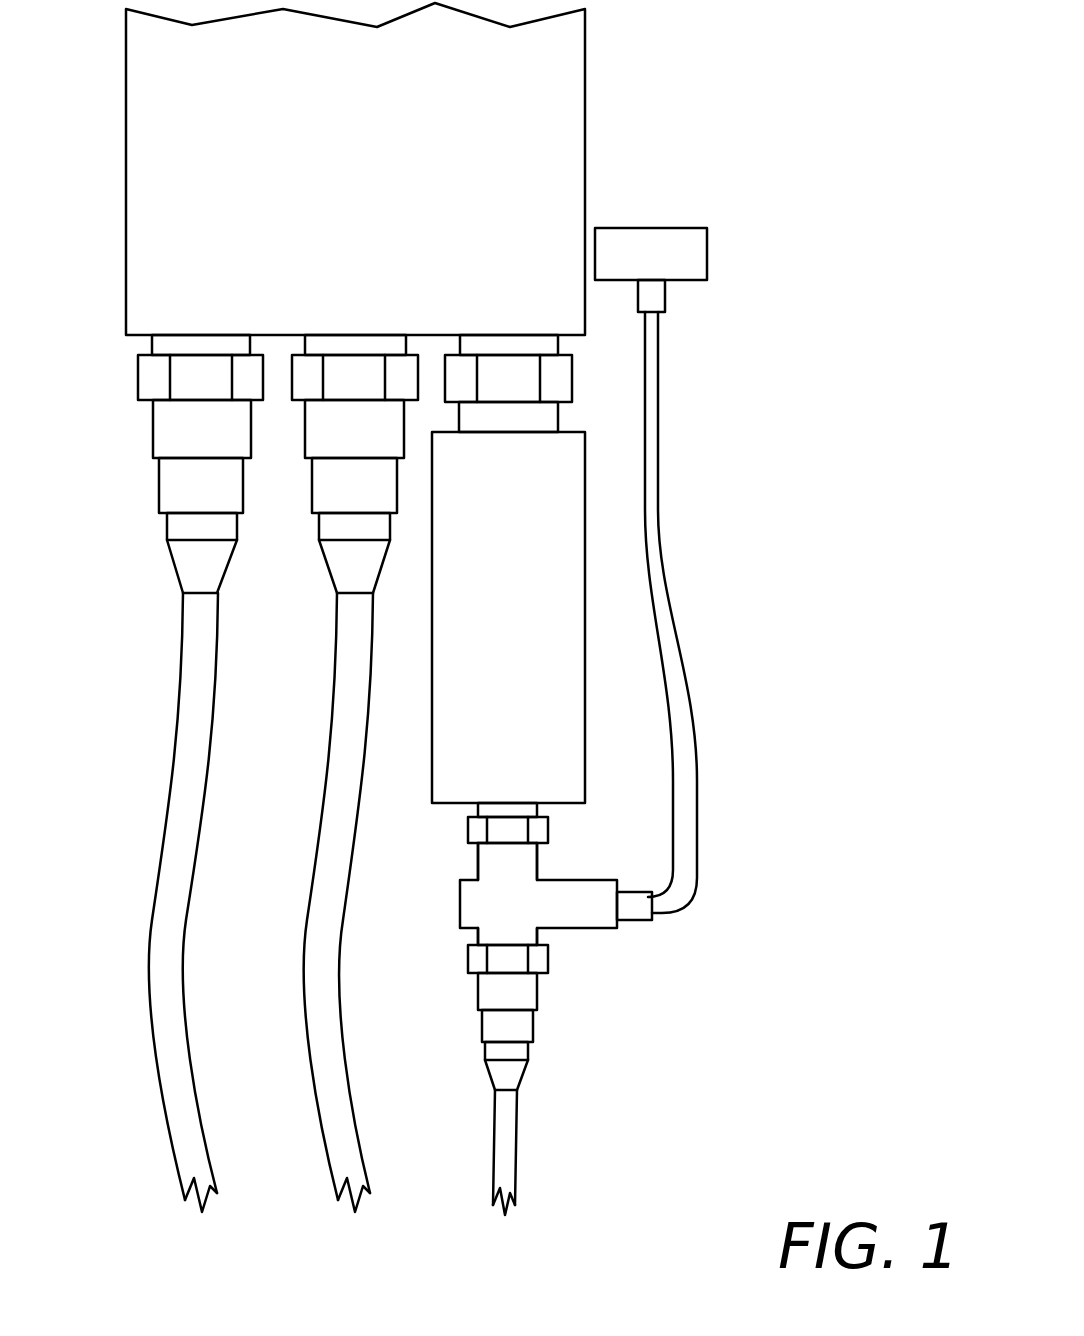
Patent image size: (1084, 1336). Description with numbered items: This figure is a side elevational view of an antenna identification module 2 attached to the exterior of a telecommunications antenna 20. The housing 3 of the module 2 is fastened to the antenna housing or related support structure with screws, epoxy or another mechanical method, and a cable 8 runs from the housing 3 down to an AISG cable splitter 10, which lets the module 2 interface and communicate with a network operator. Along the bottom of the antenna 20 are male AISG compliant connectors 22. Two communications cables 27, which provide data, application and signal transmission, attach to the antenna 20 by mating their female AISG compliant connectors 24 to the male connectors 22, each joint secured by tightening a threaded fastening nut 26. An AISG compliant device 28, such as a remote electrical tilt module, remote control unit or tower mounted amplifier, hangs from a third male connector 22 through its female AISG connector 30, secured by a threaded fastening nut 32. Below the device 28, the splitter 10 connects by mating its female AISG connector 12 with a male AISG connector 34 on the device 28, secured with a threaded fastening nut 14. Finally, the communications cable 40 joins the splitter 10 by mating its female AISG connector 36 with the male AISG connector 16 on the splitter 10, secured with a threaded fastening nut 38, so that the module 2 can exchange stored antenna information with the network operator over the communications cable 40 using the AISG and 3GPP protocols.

The antenna identification module 2 is at (736, 184).
The housing 3 is at (707, 231).
The cable 8 is at (680, 683).
The AISG cable splitter 10 is at (549, 907).
The female AISG connector 12 is at (477, 867).
The threaded fastening nut 14 is at (550, 830).
The male AISG connector 16 is at (477, 938).
The antenna 20 is at (587, 125).
The male AISG compliant connector 22 is at (151, 343).
The female AISG compliant connector 24 is at (153, 430).
The threaded fastening nut 26 is at (138, 380).
The communications cable 27 is at (303, 920).
The AISG compliant device 28 is at (562, 638).
The female AISG connector 30 is at (560, 417).
The threaded fastening nut 32 is at (573, 375).
The male AISG connector 34 is at (477, 812).
The female AISG connector 36 is at (477, 990).
The threaded fastening nut 38 is at (550, 958).
The communications cable 40 is at (518, 1145).